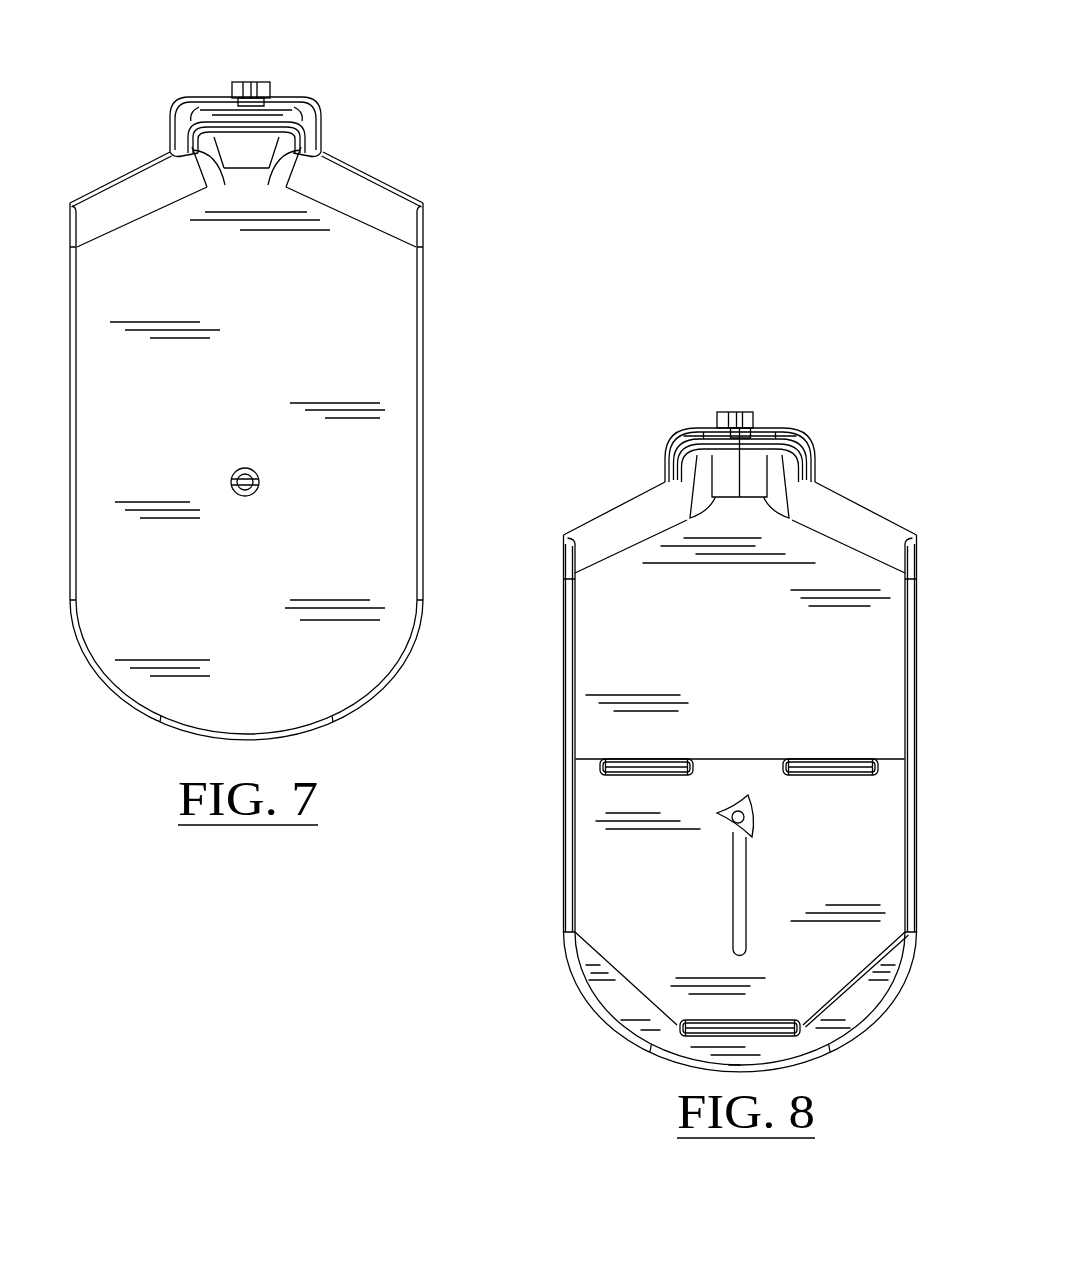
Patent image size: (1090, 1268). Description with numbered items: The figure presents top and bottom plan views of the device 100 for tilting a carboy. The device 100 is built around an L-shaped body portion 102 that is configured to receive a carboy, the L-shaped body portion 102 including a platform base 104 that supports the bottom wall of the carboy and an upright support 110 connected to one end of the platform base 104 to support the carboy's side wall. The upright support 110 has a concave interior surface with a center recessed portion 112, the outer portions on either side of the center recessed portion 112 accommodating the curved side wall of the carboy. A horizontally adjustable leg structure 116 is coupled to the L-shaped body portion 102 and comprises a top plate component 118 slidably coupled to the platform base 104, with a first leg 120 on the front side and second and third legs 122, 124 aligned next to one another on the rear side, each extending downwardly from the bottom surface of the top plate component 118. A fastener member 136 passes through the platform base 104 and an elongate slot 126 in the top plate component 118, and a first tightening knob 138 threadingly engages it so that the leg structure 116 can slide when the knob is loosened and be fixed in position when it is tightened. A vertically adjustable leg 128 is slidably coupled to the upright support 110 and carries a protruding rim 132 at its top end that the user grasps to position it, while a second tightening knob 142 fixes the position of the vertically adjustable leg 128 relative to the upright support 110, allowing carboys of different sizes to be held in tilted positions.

In FIG. 7, the device for tilting a carboy 100 is at (135, 780).
In FIG. 8, the device for tilting a carboy 100 is at (723, 1045).
In FIG. 7, the L-shaped body portion 102 is at (432, 348).
In FIG. 8, the L-shaped body portion 102 is at (689, 733).
In FIG. 7, the platform base 104 is at (290, 600).
In FIG. 8, the platform base 104 is at (678, 648).
In FIG. 7, the upright support 110 is at (355, 178).
In FIG. 8, the upright support 110 is at (754, 508).
In FIG. 7, the center recessed portion 112 is at (247, 152).
In FIG. 8, the horizontally adjustable leg structure 116 is at (709, 988).
In FIG. 8, the top plate component 118 is at (669, 903).
In FIG. 8, the first leg 120 is at (816, 1059).
In FIG. 8, the second leg 122 is at (679, 734).
In FIG. 8, the third leg 124 is at (840, 736).
In FIG. 8, the elongate slot 126 is at (796, 894).
In FIG. 7, the vertically adjustable leg 128 is at (189, 85).
In FIG. 8, the vertically adjustable leg 128 is at (717, 426).
In FIG. 7, the protruding rim 132 is at (308, 117).
In FIG. 8, the protruding rim 132 is at (790, 435).
In FIG. 7, the fastener member 136 is at (252, 468).
In FIG. 8, the first tightening knob 138 is at (788, 816).
In FIG. 7, the second tightening knob 142 is at (260, 82).
In FIG. 8, the second tightening knob 142 is at (785, 394).